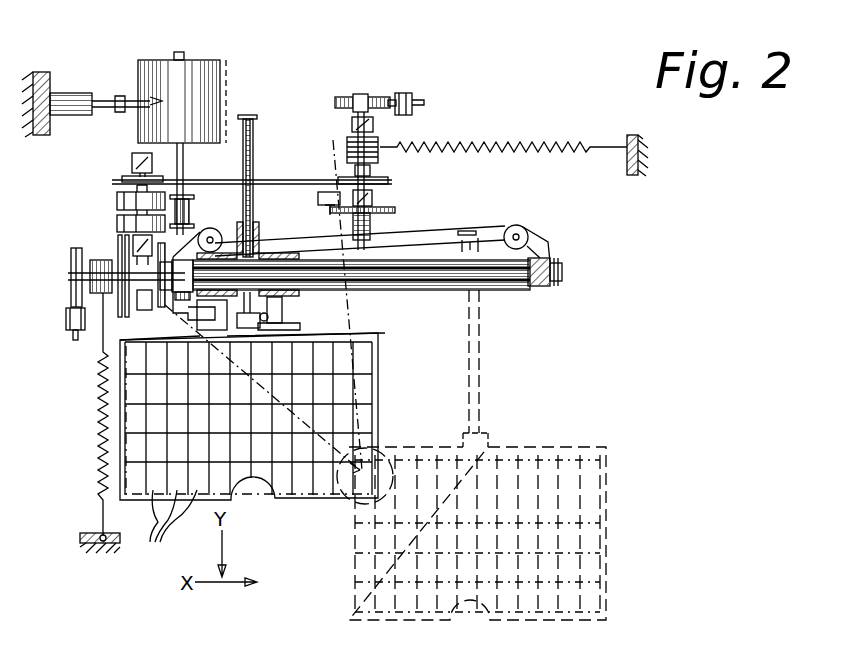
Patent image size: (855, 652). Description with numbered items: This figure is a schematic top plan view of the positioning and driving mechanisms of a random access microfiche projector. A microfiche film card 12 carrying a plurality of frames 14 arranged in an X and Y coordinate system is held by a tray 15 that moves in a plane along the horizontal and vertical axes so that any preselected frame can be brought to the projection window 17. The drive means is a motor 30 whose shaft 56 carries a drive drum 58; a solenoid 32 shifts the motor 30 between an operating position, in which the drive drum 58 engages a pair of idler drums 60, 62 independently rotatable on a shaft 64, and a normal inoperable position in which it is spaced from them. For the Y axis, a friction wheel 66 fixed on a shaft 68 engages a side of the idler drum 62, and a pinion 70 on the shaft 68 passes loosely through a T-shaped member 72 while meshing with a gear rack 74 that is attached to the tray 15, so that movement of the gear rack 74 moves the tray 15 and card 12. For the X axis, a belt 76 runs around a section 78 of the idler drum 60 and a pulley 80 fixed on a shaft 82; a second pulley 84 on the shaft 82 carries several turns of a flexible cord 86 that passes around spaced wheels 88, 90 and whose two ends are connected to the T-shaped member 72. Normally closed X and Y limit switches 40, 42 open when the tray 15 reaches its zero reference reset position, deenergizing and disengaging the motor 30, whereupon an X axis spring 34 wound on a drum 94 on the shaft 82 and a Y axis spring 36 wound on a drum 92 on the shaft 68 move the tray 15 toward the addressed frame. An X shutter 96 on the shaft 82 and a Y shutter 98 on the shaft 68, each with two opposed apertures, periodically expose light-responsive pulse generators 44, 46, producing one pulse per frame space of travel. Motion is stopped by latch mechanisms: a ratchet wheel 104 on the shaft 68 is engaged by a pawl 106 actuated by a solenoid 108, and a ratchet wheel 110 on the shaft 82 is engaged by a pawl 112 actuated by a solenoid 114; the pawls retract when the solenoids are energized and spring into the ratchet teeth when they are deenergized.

The microfiche film card 12 is at (372, 372).
The frames 14 is at (171, 522).
The tray 15 is at (379, 351).
The projection window 17 is at (384, 446).
The motor 30 is at (163, 60).
The solenoid 32 is at (70, 93).
The X axis spring 34 is at (497, 146).
The Y axis spring 36 is at (98, 374).
The X limit switch 40 is at (215, 320).
The Y limit switch 42 is at (282, 306).
The X pulse generator 44 is at (318, 200).
The Y pulse generator 46 is at (145, 310).
The motor shaft 56 is at (184, 176).
The drive drum 58 is at (193, 213).
The idler drum 60 is at (117, 200).
The idler drum 62 is at (117, 224).
The shaft 64 is at (133, 160).
The friction wheel 66 is at (133, 246).
The shaft 68 is at (68, 276).
The pinion 70 is at (507, 288).
The T-shaped member 72 is at (264, 248).
The gear rack 74 is at (253, 119).
The belt 76 is at (265, 180).
The section of idler drum 78 is at (123, 178).
The pulley 80 is at (388, 181).
The shaft 82 is at (355, 171).
The second pulley 84 is at (371, 228).
The flexible cord 86 is at (468, 231).
The wheel 88 is at (211, 230).
The wheel 90 is at (526, 229).
The drum 92 is at (100, 270).
The drum 94 is at (347, 147).
The X shutter 96 is at (395, 210).
The Y shutter 98 is at (120, 262).
The ratchet wheel 104 is at (71, 260).
The pawl 106 is at (66, 320).
The solenoid 108 is at (73, 337).
The ratchet wheel 110 is at (350, 97).
The pawl 112 is at (392, 99).
The solenoid 114 is at (407, 92).